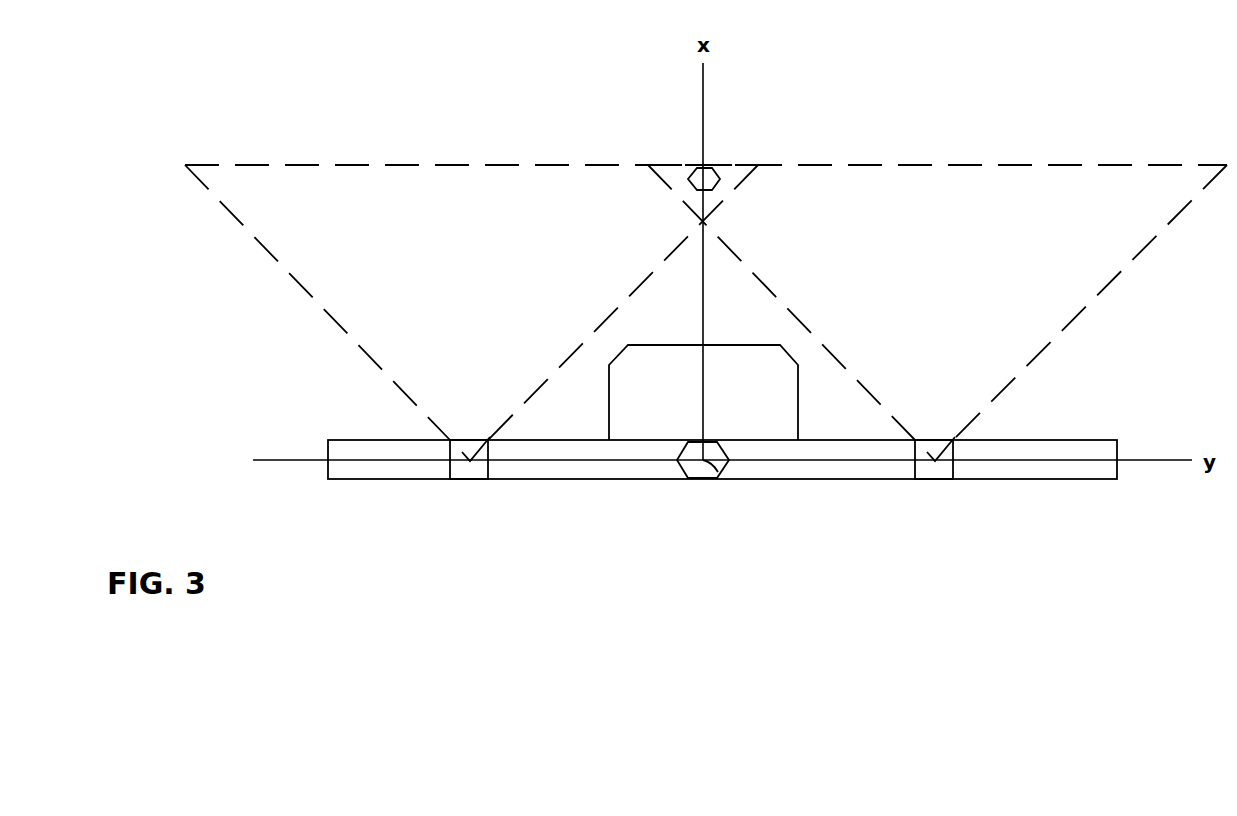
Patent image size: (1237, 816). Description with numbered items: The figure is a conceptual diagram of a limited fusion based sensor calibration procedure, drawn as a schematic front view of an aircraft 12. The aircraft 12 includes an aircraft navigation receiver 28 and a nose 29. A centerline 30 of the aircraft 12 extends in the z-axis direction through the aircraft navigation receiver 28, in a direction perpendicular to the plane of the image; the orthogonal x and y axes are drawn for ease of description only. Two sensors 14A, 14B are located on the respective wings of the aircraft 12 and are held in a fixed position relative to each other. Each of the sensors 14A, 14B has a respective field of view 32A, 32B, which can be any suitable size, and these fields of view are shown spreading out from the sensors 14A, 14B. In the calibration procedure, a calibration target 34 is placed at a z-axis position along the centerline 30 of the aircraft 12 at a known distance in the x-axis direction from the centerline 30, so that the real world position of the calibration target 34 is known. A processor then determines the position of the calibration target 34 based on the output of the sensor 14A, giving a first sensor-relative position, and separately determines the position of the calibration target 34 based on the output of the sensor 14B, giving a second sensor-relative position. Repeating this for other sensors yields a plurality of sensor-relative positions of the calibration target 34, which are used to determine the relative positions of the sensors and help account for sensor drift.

The aircraft 12 is at (870, 480).
The sensor 14A is at (470, 472).
The sensor 14B is at (938, 472).
The aircraft navigation receiver 28 is at (702, 478).
The nose 29 is at (704, 345).
The centerline 30 is at (718, 472).
The field of view 32A is at (407, 167).
The field of view 32B is at (970, 167).
The calibration target 34 is at (705, 176).